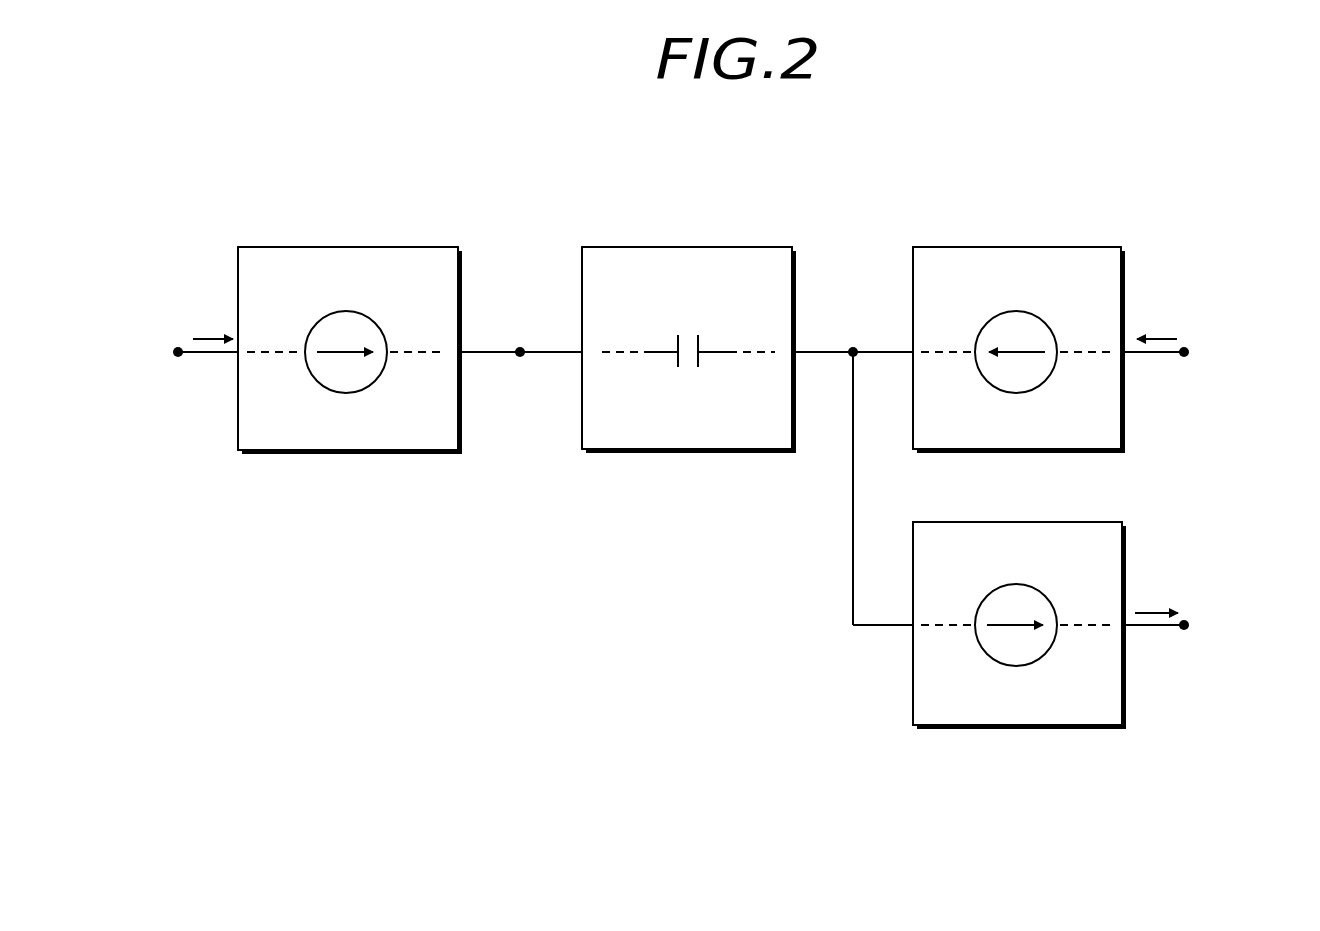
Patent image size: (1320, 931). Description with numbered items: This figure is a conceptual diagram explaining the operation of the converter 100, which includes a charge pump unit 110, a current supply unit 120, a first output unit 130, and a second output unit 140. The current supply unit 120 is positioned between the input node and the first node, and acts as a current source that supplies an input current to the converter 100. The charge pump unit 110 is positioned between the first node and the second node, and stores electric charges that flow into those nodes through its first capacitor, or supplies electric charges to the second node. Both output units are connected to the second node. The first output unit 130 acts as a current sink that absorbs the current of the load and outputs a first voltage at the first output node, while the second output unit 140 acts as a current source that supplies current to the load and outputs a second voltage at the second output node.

The converter 100 is at (289, 131).
The charge pump unit 110 is at (690, 247).
The current supply unit 120 is at (347, 247).
The first output unit 130 is at (1024, 247).
The second output unit 140 is at (1015, 727).